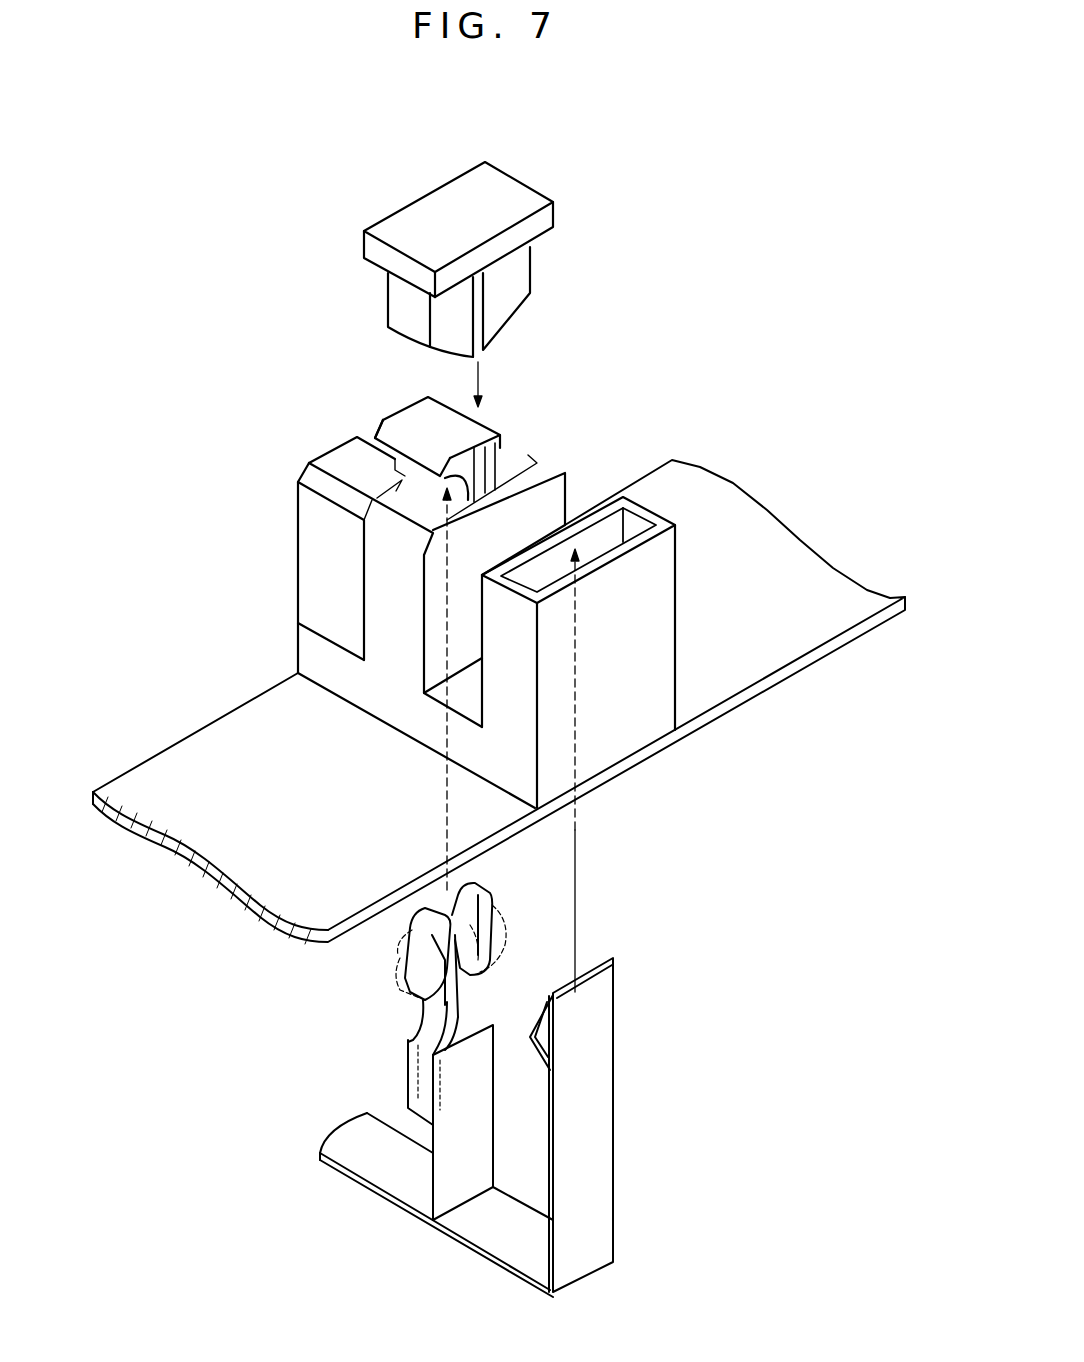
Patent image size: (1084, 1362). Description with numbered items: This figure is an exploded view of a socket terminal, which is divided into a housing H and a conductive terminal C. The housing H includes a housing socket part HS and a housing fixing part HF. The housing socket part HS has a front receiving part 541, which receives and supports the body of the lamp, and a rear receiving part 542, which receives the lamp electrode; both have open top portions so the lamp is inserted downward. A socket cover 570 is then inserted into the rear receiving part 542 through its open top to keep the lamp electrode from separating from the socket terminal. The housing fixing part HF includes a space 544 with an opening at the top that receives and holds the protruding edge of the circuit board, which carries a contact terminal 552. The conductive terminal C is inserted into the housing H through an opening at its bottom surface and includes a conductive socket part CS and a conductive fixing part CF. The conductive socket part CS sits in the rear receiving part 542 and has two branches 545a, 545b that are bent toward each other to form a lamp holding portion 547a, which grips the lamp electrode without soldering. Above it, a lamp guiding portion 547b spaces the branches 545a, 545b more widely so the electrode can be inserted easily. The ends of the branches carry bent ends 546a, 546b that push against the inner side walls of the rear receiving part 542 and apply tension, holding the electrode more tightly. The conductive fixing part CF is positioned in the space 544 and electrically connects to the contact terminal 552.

The socket cover 570 is at (513, 186).
The front receiving part 541 is at (367, 437).
The rear receiving part 542 is at (503, 461).
The space 544 is at (592, 545).
The housing socket part HS is at (292, 548).
The housing fixing part HF is at (662, 600).
The housing H is at (146, 760).
The lamp guiding portion 547b is at (445, 905).
The branch 545a is at (392, 930).
The branch 545b is at (478, 884).
The bent end 546a is at (400, 965).
The bent end 546b is at (503, 945).
The lamp holding portion 547a is at (433, 988).
The conductive terminal C is at (294, 1034).
The conductive socket part CS is at (410, 1091).
The contact terminal 552 is at (545, 1018).
The conductive fixing part CF is at (605, 1129).